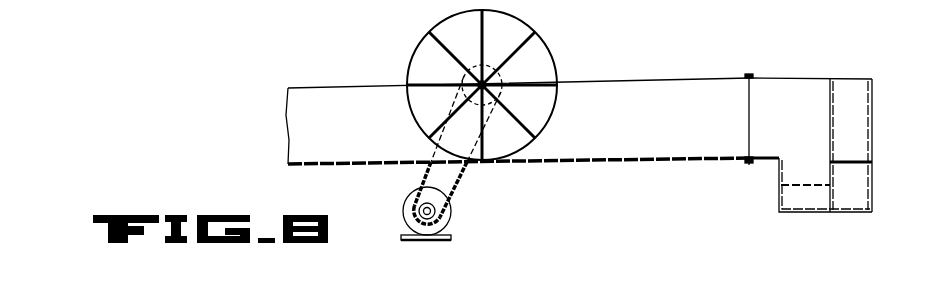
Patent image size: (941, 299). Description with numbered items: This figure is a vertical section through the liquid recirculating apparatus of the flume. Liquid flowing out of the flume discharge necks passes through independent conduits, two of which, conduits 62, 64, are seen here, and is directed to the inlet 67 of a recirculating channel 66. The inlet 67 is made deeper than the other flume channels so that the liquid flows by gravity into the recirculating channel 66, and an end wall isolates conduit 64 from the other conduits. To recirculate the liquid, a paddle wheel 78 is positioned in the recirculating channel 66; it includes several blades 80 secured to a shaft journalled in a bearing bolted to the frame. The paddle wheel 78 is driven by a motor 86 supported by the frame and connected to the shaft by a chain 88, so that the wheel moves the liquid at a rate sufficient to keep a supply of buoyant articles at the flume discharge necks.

The conduit 62 is at (807, 201).
The conduit 64 is at (858, 182).
The recirculating channel 66 is at (791, 92).
The inlet 67 is at (873, 92).
The paddle wheel 78 is at (548, 56).
The blades 80 is at (428, 84).
The motor 86 is at (448, 213).
The chain 88 is at (453, 190).